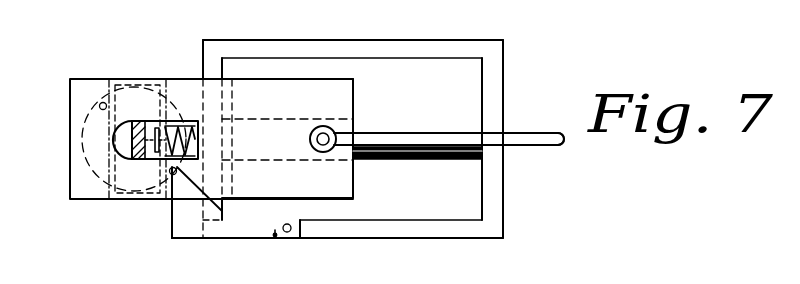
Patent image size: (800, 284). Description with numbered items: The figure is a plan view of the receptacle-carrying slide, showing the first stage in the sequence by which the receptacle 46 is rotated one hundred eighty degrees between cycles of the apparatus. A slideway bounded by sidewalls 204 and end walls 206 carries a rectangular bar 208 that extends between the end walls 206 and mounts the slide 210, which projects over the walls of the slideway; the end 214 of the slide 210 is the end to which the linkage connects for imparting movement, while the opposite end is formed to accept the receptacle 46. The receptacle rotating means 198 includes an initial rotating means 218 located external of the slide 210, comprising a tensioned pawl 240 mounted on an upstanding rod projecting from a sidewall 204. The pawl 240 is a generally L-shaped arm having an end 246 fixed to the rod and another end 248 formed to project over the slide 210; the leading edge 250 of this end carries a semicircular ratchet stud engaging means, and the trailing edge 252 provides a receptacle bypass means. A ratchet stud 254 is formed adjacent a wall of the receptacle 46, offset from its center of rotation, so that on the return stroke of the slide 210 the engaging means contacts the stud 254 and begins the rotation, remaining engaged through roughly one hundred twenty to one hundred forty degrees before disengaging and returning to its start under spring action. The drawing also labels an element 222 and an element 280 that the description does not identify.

The receptacle 46 is at (137, 82).
The receptacle rotating means 198 is at (238, 247).
The sidewalls 204 is at (461, 42).
The end walls 206 is at (202, 61).
The rectangular bar 208 is at (448, 129).
The slide 210 is at (355, 96).
The end of slide 214 is at (350, 104).
The initial rotating means 218 is at (274, 240).
The dial 222 is at (84, 151).
The tensioned pawl 240 is at (188, 226).
The end of pawl 246 is at (301, 222).
The other end of pawl 248 is at (178, 215).
The leading edge 250 is at (172, 228).
The trailing edge 252 is at (207, 194).
The ratchet stud 254 is at (101, 102).
The rod end 280 is at (537, 148).